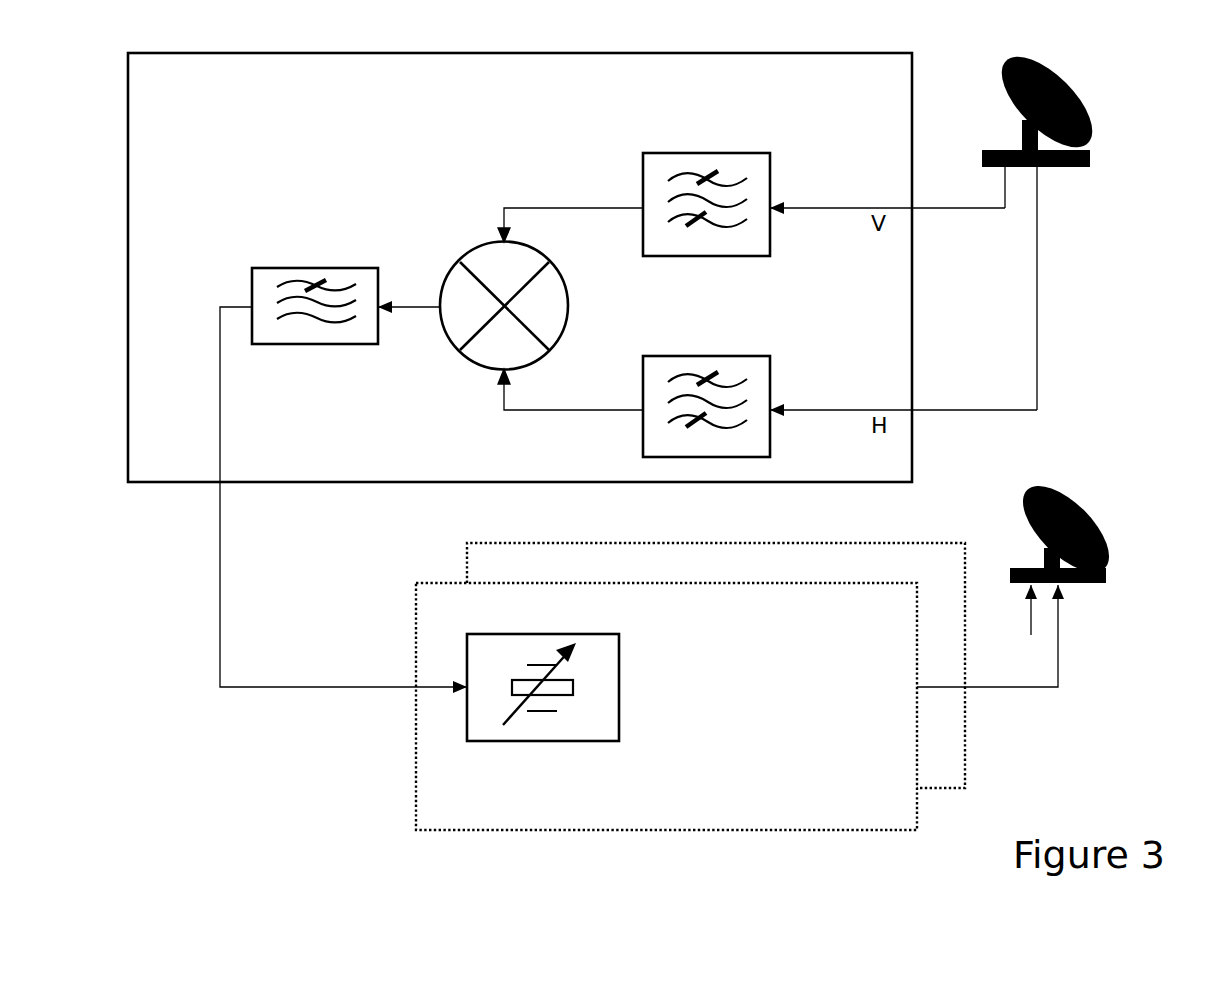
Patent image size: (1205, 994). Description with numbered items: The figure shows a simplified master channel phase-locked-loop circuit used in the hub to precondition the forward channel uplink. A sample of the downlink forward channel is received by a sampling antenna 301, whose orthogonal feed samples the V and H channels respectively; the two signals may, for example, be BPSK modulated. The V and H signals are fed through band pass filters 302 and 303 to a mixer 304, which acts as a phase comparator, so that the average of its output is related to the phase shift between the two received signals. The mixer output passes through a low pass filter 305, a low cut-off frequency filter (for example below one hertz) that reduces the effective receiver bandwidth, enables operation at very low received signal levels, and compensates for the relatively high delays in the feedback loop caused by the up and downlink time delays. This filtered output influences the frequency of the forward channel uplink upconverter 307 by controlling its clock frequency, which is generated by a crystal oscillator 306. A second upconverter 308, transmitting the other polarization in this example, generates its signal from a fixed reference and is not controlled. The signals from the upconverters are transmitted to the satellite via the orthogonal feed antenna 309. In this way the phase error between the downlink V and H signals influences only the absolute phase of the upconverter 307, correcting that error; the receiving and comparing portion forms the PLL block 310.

The sampling antenna 301 is at (1093, 117).
The band pass filter 302 is at (742, 152).
The band pass filter 303 is at (717, 355).
The mixer 304 is at (467, 232).
The low pass filter 305 is at (313, 263).
The crystal oscillator 306 is at (466, 708).
The forward channel uplink upconverter 307 is at (416, 830).
The second upconverter 308 is at (466, 543).
The orthogonal feed antenna 309 is at (1075, 490).
The PLL block 310 is at (835, 52).